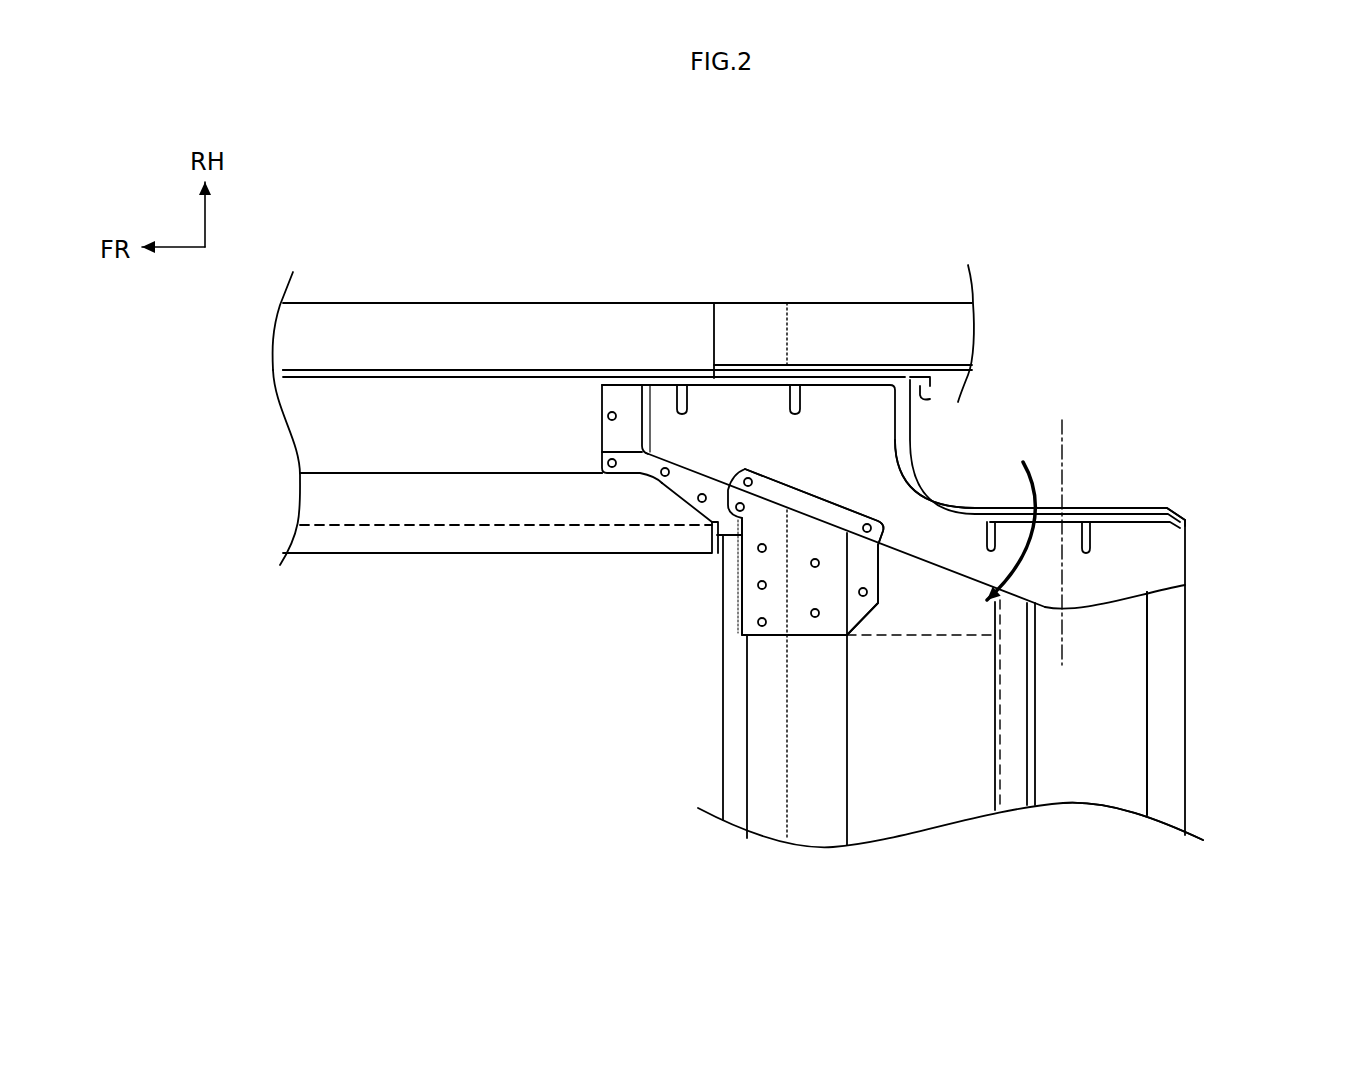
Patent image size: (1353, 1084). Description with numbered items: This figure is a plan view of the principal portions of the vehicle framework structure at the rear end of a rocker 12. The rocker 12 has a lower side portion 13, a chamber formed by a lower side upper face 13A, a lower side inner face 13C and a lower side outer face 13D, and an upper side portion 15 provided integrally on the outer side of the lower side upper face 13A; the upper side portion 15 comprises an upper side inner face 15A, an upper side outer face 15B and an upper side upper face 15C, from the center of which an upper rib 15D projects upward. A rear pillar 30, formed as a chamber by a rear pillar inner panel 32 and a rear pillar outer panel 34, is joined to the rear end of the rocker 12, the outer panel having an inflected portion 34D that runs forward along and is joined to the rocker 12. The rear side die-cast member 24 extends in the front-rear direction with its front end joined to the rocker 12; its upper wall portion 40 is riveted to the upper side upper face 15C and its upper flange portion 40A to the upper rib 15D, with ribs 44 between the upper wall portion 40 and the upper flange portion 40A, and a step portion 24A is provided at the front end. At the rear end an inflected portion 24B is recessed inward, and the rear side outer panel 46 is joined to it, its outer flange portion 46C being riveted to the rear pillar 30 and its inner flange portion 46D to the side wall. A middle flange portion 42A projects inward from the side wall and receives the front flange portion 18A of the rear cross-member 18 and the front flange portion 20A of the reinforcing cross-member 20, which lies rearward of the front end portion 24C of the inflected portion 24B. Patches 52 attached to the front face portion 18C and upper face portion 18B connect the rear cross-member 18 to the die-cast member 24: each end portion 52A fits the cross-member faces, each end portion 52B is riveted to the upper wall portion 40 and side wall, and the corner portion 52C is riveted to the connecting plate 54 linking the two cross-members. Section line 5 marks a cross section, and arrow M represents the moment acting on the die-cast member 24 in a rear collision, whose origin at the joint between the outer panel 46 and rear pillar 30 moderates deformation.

The rocker 12 is at (467, 275).
The lower side portion 13 is at (373, 556).
The lower side upper face 13A is at (470, 500).
The lower side inner face 13C is at (540, 527).
The lower side outer face 13D is at (286, 467).
The upper side portion 15 is at (383, 303).
The upper side inner face 15A is at (404, 473).
The upper side outer face 15B is at (317, 303).
The upper side upper face 15C is at (537, 327).
The upper rib 15D is at (566, 370).
The rear cross-member 18 is at (815, 849).
The front flange portion 18A is at (730, 730).
The upper face portion 18B is at (832, 817).
The front face portion 18C is at (743, 790).
The reinforcing cross-member 20 is at (1110, 814).
The front flange portion 20A is at (1012, 792).
The rear side die-cast member 24 is at (963, 432).
The step portion 24A is at (641, 424).
The inflected portion 24B is at (947, 479).
The front end portion 24C is at (931, 387).
The rear pillar 30 is at (805, 264).
The rear pillar inner panel 32 is at (887, 364).
The rear pillar outer panel 34 is at (842, 299).
The inflected portion 34D is at (762, 323).
The upper wall portion 40 is at (1190, 552).
The upper flange portion 40A is at (1143, 522).
The middle flange portion 42A is at (673, 483).
The ribs 44 is at (787, 398).
The rear side outer panel 46 is at (1076, 505).
The outer flange portion 46C is at (938, 388).
The inner flange portion 46D is at (1186, 512).
The patch 52 is at (740, 594).
The end portion 52A is at (800, 617).
The end portion 52B is at (790, 497).
The corner portion 52C is at (862, 607).
The connecting plate 54 is at (920, 805).
The section line 5 is at (1066, 428).
The moment M is at (1016, 531).